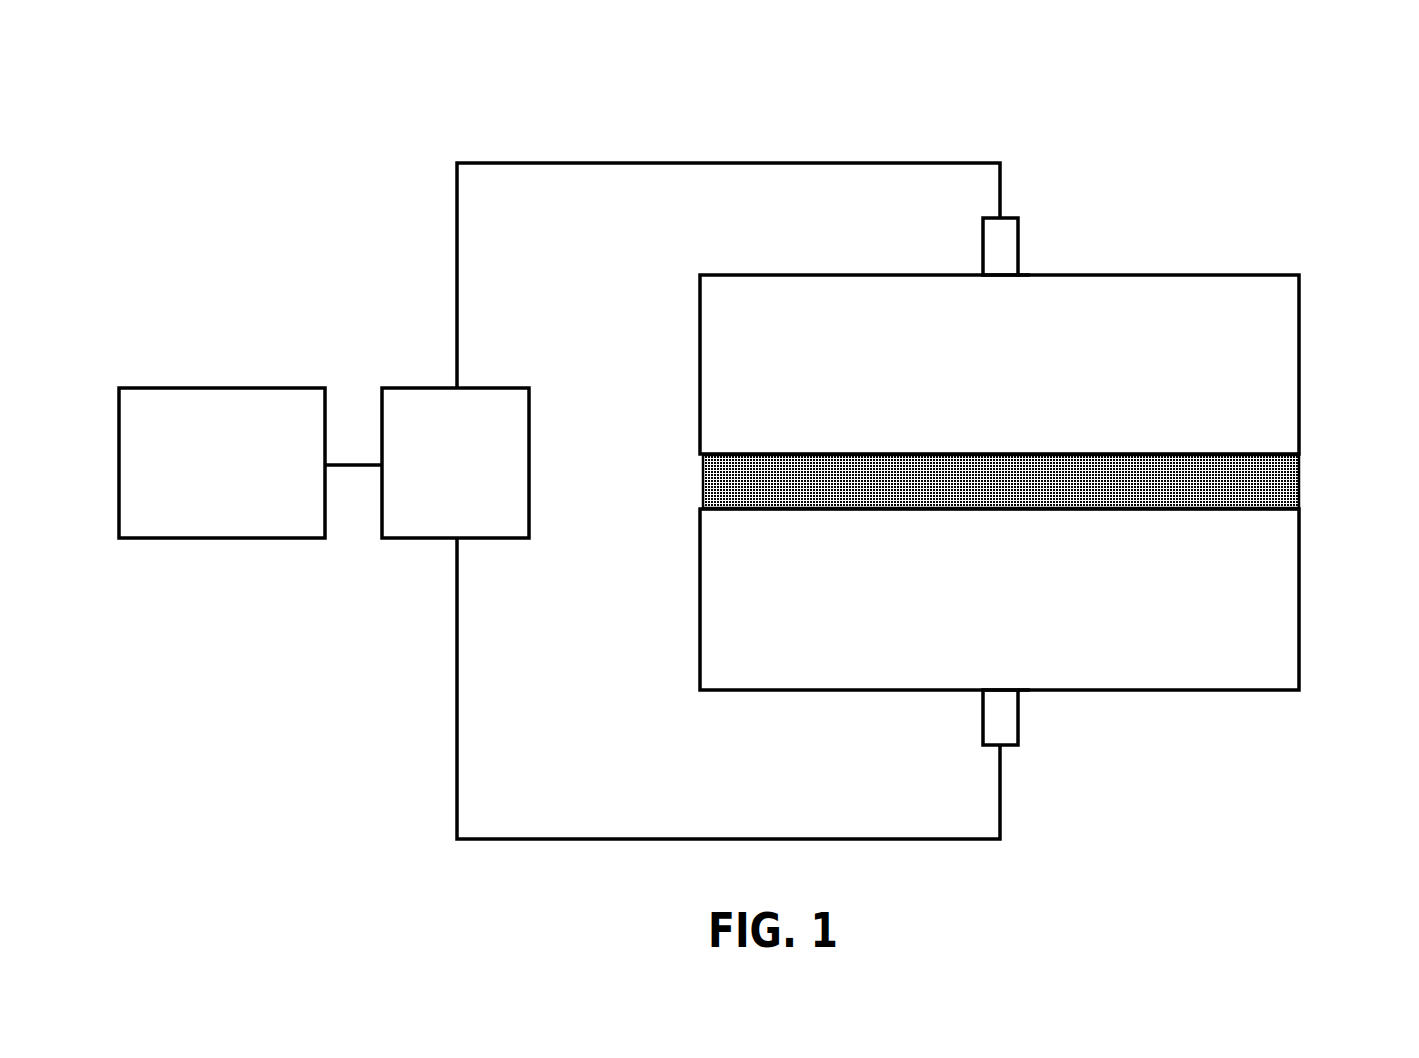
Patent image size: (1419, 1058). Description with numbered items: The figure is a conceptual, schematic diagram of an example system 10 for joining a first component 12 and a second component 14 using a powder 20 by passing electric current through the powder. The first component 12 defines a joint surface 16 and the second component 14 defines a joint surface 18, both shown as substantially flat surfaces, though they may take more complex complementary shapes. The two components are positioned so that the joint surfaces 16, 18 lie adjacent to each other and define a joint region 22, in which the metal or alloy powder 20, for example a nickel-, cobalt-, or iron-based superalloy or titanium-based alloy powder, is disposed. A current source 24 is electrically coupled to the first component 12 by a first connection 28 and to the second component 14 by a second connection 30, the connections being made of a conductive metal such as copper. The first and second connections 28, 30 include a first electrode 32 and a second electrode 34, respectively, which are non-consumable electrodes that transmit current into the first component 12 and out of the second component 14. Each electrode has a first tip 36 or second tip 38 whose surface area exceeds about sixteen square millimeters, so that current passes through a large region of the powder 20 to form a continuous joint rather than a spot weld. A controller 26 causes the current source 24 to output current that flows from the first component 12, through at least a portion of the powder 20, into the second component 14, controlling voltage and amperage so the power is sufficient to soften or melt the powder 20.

The system 10 is at (202, 90).
The first component 12 is at (1300, 340).
The second component 14 is at (1300, 614).
The joint surface 16 is at (797, 452).
The joint surface 18 is at (768, 512).
The powder 20 is at (703, 481).
The joint region 22 is at (1325, 481).
The current source 24 is at (455, 463).
The controller 26 is at (222, 463).
The first connection 28 is at (962, 163).
The second connection 30 is at (962, 841).
The first electrode 32 is at (1012, 218).
The second electrode 34 is at (1010, 748).
The first tip 36 is at (1022, 275).
The second tip 38 is at (1020, 692).